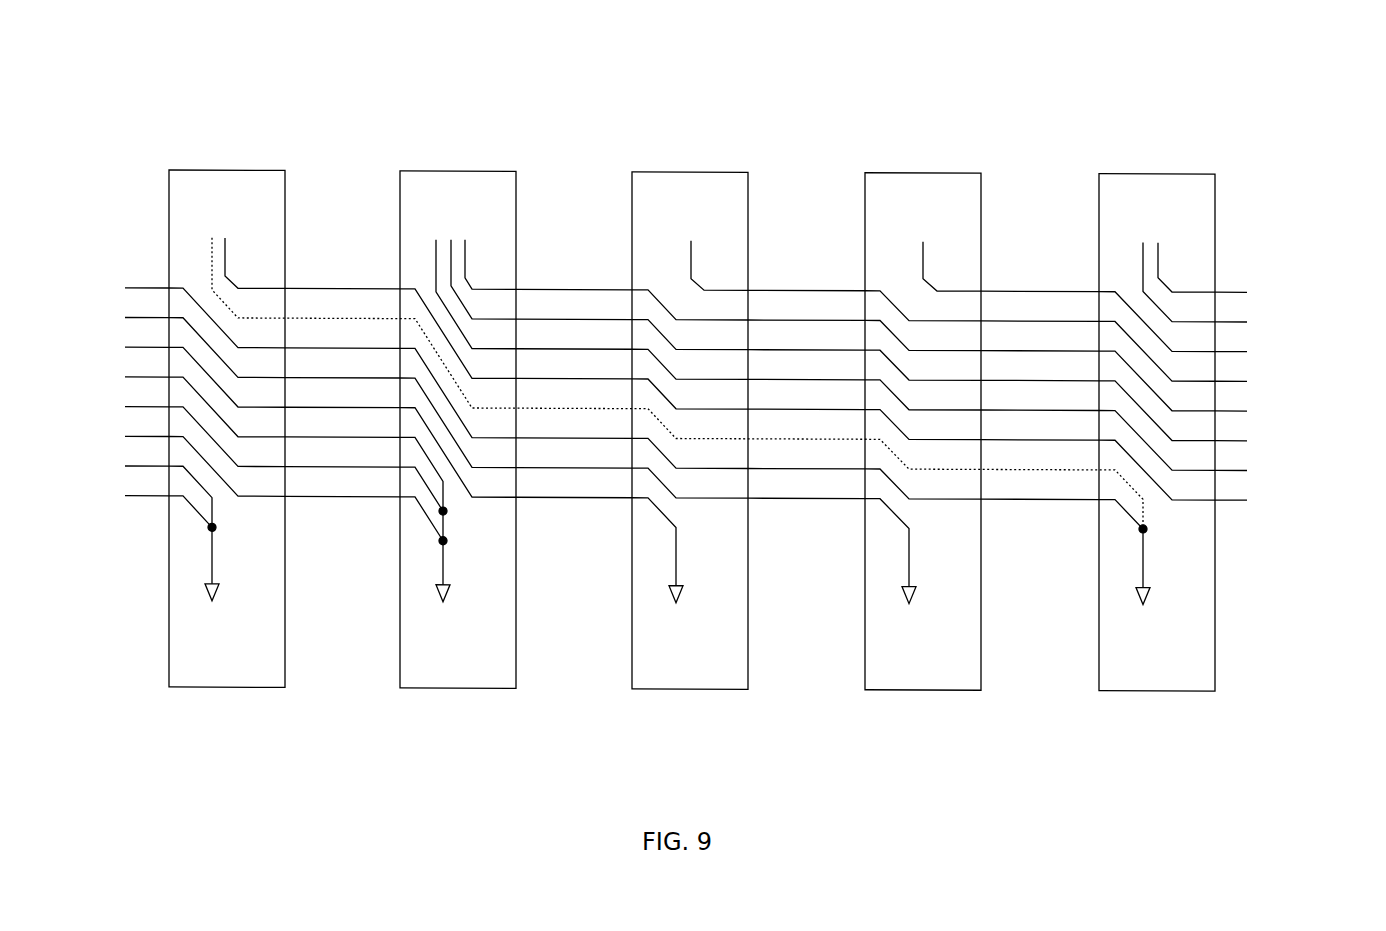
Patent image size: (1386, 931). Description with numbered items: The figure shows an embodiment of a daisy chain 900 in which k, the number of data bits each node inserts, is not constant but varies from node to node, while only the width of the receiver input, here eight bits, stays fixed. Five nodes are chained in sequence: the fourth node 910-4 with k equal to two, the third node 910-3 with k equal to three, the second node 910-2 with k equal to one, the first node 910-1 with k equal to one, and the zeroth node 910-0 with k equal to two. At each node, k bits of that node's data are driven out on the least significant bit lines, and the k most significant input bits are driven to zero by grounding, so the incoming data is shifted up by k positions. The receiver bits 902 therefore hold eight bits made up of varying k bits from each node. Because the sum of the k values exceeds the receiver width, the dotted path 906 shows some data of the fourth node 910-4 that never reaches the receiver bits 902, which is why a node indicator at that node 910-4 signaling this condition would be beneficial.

The daisy chain 900 is at (1166, 44).
The receiver bits 902 is at (1245, 588).
The Node 4 data not received 906 is at (305, 316).
The node 4 910-4 is at (214, 675).
The node 3 910-3 is at (445, 675).
The node 2 910-2 is at (677, 675).
The node 1 910-1 is at (910, 675).
The node 0 910-0 is at (1144, 675).